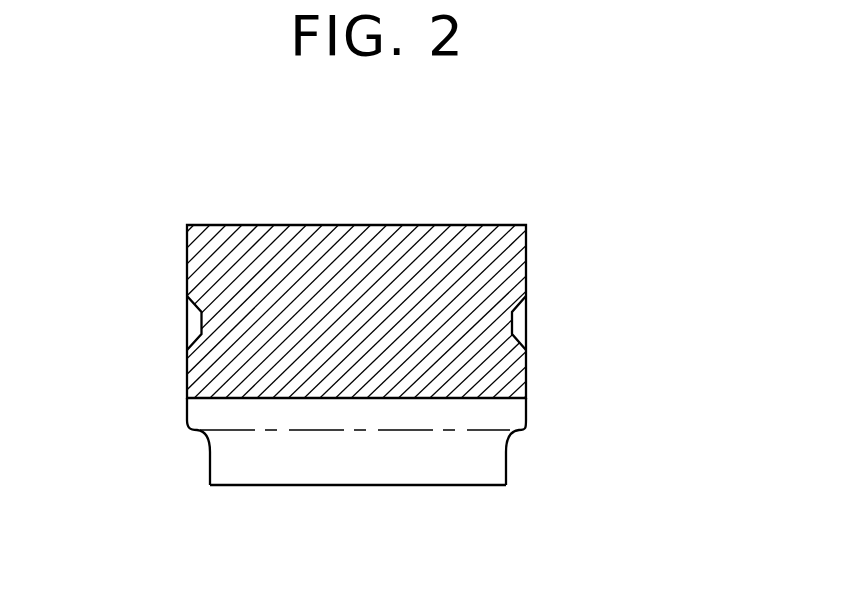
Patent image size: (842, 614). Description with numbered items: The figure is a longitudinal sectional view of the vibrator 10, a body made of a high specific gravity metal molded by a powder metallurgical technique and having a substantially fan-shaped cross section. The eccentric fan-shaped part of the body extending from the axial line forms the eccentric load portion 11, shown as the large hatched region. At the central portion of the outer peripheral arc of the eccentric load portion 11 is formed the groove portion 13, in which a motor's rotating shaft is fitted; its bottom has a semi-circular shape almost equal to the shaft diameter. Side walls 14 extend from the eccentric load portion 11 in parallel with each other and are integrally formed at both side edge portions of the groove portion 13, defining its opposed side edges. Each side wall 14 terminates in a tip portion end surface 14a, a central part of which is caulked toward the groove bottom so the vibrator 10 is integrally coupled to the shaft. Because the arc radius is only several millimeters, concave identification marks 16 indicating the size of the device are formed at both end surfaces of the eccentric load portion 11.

The vibrator 10 is at (365, 363).
The eccentric load portion 11 is at (377, 237).
The groove portion 13 is at (252, 420).
The side walls 14 is at (322, 488).
The tip portion end surface 14a is at (298, 486).
The concave identification marks 16 is at (190, 323).